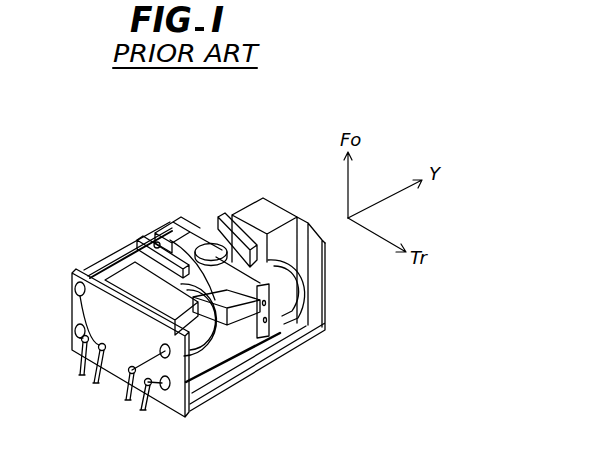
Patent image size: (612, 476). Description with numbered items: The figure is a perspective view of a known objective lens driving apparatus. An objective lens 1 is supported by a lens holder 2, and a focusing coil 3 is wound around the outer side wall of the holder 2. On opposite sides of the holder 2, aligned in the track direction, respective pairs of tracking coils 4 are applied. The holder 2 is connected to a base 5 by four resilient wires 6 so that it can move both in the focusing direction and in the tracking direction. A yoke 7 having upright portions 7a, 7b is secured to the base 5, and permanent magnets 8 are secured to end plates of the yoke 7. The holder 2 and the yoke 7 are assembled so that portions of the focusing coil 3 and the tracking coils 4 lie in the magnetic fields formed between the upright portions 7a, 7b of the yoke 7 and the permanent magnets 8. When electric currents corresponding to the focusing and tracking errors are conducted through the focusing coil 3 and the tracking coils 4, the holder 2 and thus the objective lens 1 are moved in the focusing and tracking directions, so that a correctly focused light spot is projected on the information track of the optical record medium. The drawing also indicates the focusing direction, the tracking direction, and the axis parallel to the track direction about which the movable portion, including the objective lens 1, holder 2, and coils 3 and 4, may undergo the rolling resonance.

The objective lens 1 is at (207, 252).
The lens holder 2 is at (165, 231).
The focusing coil 3 is at (257, 330).
The tracking coils 4 is at (297, 300).
The base 5 is at (113, 363).
The support wires 6 is at (100, 277).
The yoke 7 is at (248, 365).
The upright portion 7a is at (154, 244).
The upright portion 7b is at (243, 247).
The permanent magnets 8 is at (120, 282).